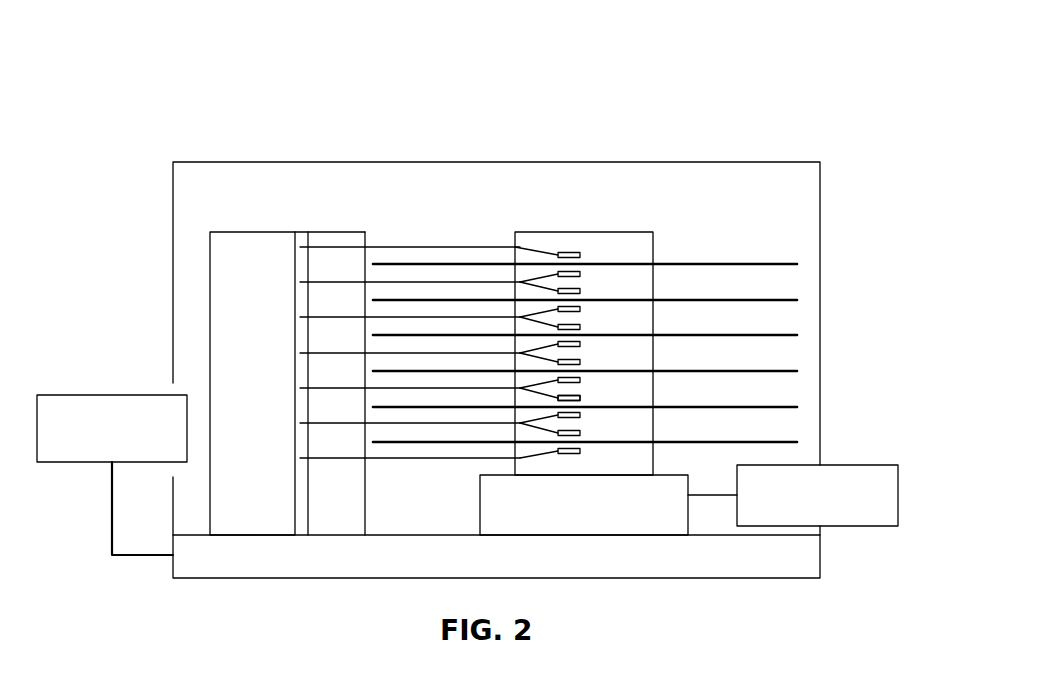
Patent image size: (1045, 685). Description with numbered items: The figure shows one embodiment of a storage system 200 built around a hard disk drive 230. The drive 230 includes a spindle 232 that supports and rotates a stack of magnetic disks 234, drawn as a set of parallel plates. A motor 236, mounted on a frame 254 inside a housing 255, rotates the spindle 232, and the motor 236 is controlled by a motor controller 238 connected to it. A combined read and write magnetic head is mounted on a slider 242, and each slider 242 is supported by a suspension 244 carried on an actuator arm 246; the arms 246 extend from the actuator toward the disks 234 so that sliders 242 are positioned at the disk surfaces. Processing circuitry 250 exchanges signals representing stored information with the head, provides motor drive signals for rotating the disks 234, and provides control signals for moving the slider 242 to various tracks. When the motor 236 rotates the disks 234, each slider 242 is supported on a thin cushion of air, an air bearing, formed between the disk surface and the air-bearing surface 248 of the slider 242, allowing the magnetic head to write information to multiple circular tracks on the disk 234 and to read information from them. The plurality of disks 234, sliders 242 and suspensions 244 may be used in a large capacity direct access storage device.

The storage system 200 is at (140, 104).
The housing 255 is at (757, 162).
The hard disk drive 230 is at (713, 230).
The spindle 232 is at (640, 232).
The magnetic disks 234 is at (785, 264).
The motor 236 is at (584, 505).
The motor controller 238 is at (856, 526).
The slider 242 is at (570, 277).
The suspension 244 is at (554, 274).
The actuator arm 246 is at (470, 258).
The air-bearing surface 248 is at (570, 402).
The processing circuitry 250 is at (84, 395).
The frame 254 is at (228, 578).